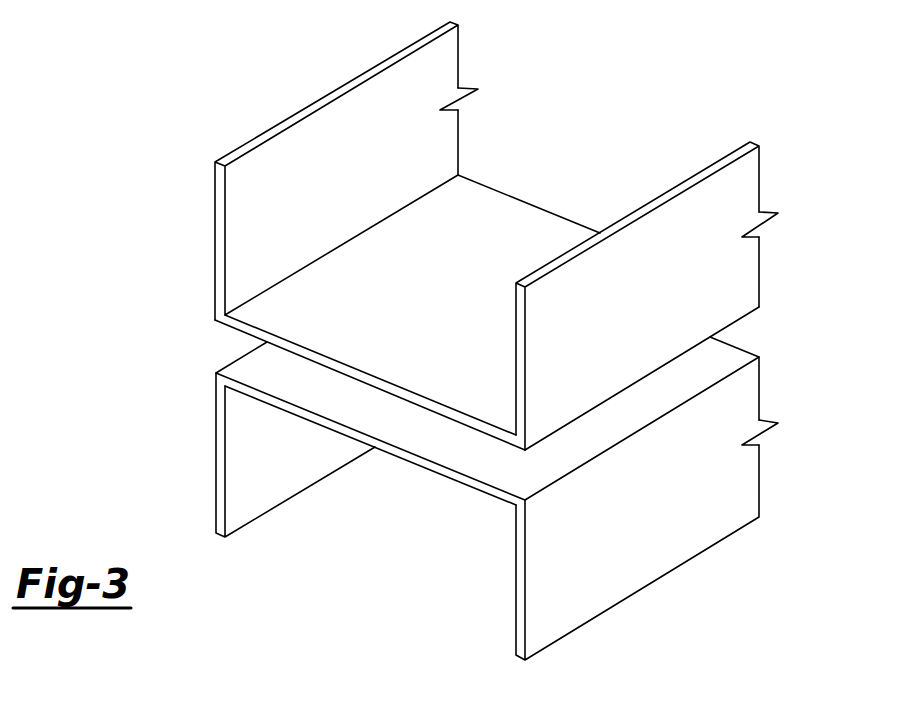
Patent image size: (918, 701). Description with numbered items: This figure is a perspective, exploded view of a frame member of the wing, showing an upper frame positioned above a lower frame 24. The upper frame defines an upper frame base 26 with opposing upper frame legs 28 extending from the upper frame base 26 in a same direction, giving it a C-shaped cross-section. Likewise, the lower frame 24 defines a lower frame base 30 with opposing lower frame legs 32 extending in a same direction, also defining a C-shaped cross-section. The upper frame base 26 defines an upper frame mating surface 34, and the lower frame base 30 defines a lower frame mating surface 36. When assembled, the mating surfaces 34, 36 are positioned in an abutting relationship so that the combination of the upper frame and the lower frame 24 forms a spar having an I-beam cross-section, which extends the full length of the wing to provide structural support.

The lower frame 24 is at (551, 498).
The upper frame base 26 is at (503, 236).
The upper frame legs 28 is at (339, 186).
The lower frame base 30 is at (416, 476).
The lower frame legs 32 is at (261, 465).
The upper frame mating surface 34 is at (214, 336).
The lower frame mating surface 36 is at (361, 424).